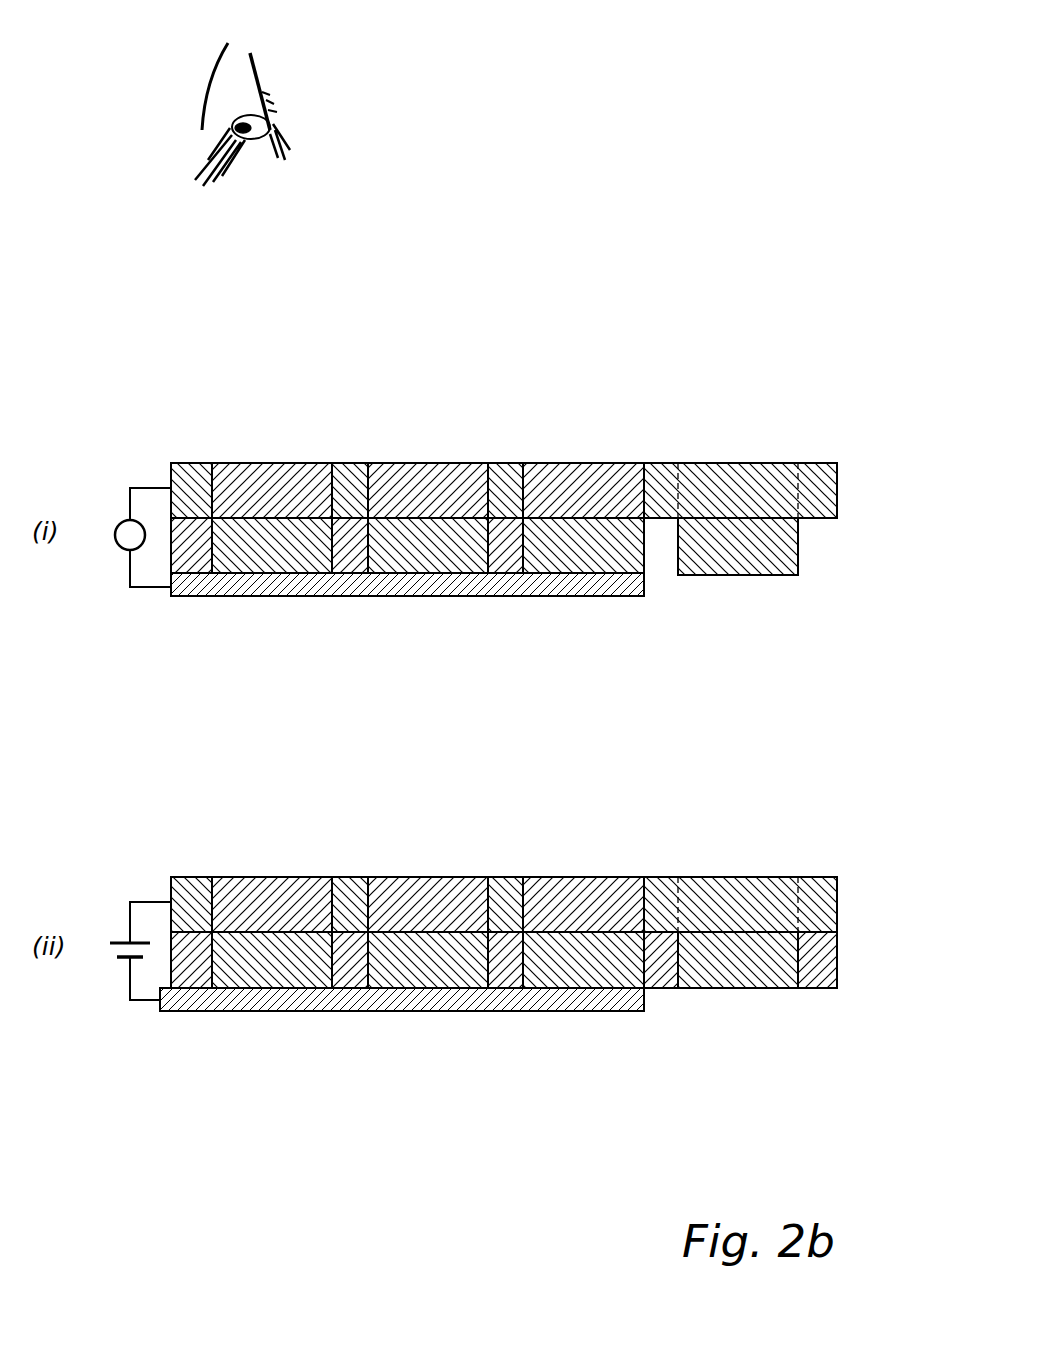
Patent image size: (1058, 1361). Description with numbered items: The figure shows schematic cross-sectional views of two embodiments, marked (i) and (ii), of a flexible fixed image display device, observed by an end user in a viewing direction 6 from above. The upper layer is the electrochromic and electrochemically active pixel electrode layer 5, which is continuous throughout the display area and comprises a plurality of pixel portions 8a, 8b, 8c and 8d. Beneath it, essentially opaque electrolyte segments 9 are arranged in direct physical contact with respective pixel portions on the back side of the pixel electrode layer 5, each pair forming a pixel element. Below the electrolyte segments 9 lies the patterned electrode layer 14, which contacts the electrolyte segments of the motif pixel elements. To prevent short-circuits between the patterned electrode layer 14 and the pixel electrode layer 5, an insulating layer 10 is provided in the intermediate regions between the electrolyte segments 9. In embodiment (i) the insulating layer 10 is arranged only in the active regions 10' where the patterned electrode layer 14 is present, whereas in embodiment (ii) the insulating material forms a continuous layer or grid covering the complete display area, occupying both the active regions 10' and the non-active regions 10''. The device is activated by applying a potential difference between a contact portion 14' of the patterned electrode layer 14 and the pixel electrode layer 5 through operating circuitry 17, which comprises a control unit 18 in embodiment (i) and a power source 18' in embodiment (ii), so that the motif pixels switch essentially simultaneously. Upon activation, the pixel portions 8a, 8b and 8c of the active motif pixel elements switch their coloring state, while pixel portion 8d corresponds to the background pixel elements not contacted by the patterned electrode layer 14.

The pixel electrode layer 5 is at (810, 468).
The viewing direction 6 is at (243, 150).
The pixel portion 8a is at (247, 478).
The pixel portion 8b is at (413, 478).
The pixel portion 8c is at (563, 478).
The pixel portion 8d is at (787, 490).
The electrolyte segment 9 is at (275, 553).
The insulating layer 10 is at (203, 725).
The active regions of insulating layer 10' is at (452, 780).
The non-active regions of insulating layer 10'' is at (751, 1019).
The patterned electrode layer 14 is at (407, 658).
The contact portion 14' is at (402, 1073).
The operating circuitry 17 is at (135, 487).
The control unit 18 is at (111, 500).
The power source 18' is at (107, 900).